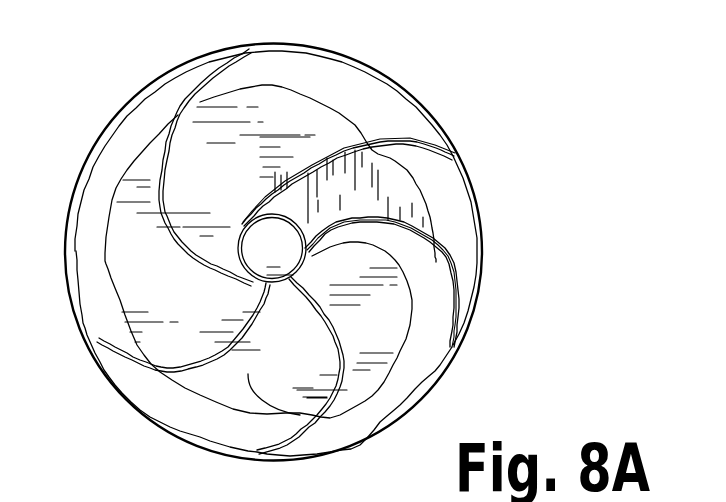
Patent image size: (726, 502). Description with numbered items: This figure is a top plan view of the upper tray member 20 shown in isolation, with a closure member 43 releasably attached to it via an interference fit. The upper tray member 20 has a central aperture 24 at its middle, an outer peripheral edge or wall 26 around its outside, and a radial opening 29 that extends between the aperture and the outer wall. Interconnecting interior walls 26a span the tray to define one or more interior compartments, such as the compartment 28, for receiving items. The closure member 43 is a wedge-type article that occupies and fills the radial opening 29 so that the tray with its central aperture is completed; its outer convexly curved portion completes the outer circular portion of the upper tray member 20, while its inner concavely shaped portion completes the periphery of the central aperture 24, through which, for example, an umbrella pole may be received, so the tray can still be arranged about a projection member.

The upper tray member 20 is at (359, 60).
The central aperture 24 is at (284, 257).
The outer peripheral edge or wall 26 is at (124, 105).
The interconnecting interior wall 26a is at (336, 378).
The interior compartment 28 is at (192, 298).
The radial opening 29 is at (392, 191).
The closure member 43 is at (483, 272).